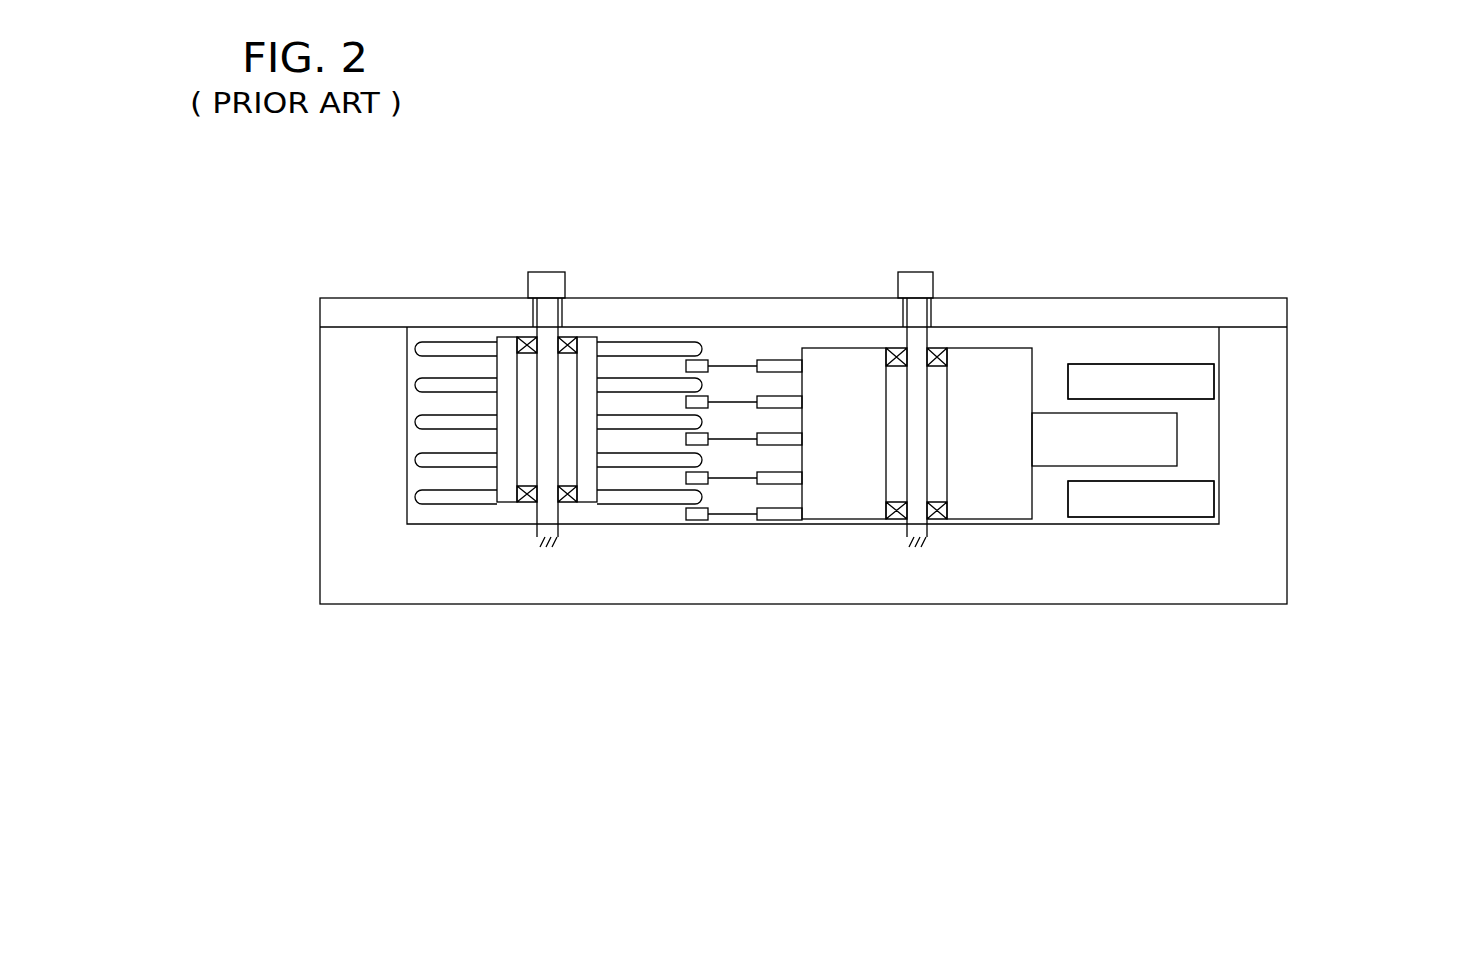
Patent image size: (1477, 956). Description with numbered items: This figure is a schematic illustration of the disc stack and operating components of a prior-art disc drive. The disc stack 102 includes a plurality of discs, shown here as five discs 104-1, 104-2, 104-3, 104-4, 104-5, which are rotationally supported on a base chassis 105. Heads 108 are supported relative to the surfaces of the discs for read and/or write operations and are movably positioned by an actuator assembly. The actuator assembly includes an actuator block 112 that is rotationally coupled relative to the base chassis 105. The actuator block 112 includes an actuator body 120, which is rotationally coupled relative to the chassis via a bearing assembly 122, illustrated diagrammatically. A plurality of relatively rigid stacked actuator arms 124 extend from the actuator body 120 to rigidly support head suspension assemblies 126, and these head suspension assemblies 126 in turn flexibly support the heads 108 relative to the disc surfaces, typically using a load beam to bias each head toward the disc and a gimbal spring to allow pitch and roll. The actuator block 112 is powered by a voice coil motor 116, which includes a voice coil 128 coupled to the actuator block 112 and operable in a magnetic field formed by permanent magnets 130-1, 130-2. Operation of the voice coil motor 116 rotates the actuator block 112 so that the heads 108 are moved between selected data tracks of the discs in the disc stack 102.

The disc stack 102 is at (612, 317).
The disc 104-1 is at (413, 348).
The disc 104-2 is at (413, 387).
The disc 104-3 is at (413, 423).
The disc 104-4 is at (413, 460).
The disc 104-5 is at (413, 498).
The base chassis 105 is at (1288, 434).
The heads 108 is at (686, 400).
The actuator block 112 is at (1010, 325).
The voice coil motor 116 is at (1140, 330).
The actuator body 120 is at (963, 450).
The bearing assembly 122 is at (938, 353).
The actuator arms 124 is at (782, 439).
The head suspension assemblies 126 is at (725, 402).
The voice coil 128 is at (1057, 440).
The permanent magnet 130-1 is at (1215, 383).
The permanent magnet 130-2 is at (1215, 503).